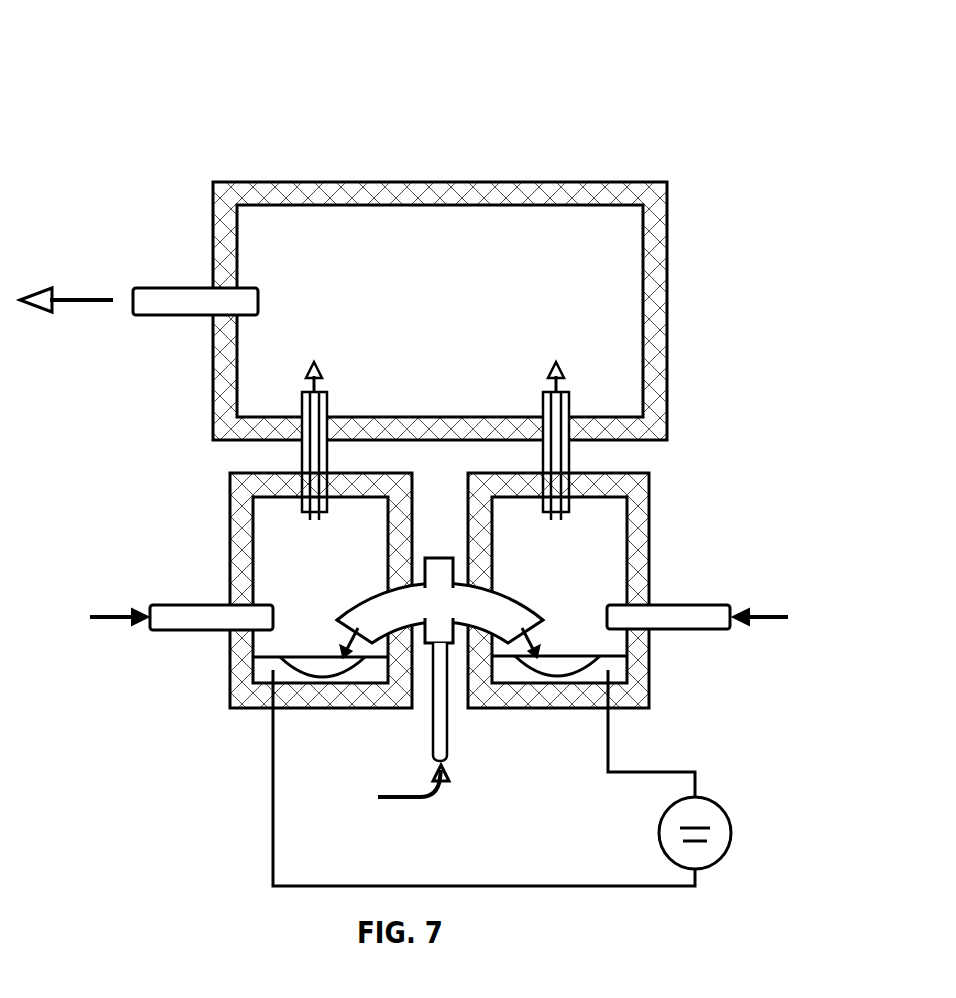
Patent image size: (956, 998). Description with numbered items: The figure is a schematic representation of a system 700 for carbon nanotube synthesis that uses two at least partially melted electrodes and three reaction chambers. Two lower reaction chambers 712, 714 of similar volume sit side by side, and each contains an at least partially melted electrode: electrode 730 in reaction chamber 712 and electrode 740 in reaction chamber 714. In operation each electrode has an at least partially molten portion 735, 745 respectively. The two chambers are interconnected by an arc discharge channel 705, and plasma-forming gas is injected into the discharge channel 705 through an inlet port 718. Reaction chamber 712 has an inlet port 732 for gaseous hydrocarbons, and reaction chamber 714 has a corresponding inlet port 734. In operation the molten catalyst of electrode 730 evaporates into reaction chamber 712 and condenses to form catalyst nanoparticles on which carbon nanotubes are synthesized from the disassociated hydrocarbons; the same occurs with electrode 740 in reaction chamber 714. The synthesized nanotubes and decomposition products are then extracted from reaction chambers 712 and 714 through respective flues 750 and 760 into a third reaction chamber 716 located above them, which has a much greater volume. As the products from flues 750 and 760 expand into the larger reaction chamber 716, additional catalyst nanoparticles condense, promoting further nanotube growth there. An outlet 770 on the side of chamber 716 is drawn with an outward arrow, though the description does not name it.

The system 700 is at (156, 113).
The arc discharge channel 705 is at (520, 595).
The reaction chamber 712 is at (253, 590).
The reaction chamber 714 is at (597, 577).
The third reaction chamber 716 is at (427, 233).
The inlet port 718 is at (475, 720).
The electrode 730 is at (250, 688).
The inlet port 732 is at (181, 587).
The inlet port 734 is at (724, 590).
The at least partially molten portion 735 is at (322, 678).
The electrode 740 is at (622, 684).
The at least partially molten portion 745 is at (547, 663).
The flue 750 is at (211, 441).
The flue 760 is at (575, 452).
The product gas outlet 770 is at (183, 287).